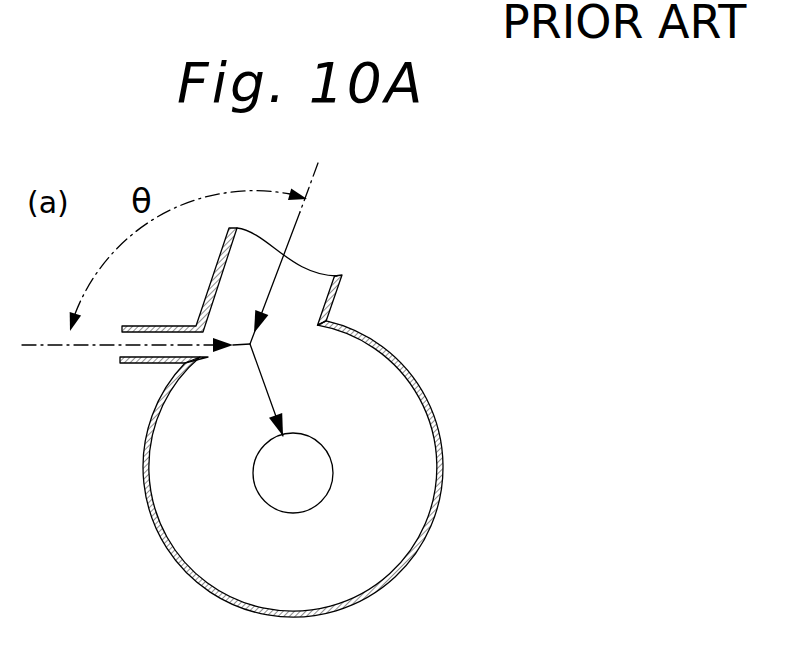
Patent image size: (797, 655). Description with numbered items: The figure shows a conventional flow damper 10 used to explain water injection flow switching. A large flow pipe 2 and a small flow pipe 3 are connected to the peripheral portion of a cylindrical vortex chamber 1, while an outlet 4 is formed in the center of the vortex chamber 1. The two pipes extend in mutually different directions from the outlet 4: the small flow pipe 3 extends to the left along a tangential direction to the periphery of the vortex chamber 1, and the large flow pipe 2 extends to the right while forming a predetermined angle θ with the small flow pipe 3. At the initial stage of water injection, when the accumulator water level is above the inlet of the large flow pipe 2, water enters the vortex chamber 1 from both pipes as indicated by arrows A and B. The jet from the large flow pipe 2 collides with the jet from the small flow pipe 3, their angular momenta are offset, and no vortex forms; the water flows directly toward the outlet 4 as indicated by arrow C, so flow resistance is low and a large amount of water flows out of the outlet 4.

The flow damper 10 is at (405, 267).
The vortex chamber 1 is at (147, 493).
The large flow pipe 2 is at (336, 296).
The small flow pipe 3 is at (152, 365).
The outlet 4 is at (327, 502).
The arrow A is at (278, 277).
The arrow B is at (140, 345).
The arrow C is at (266, 392).